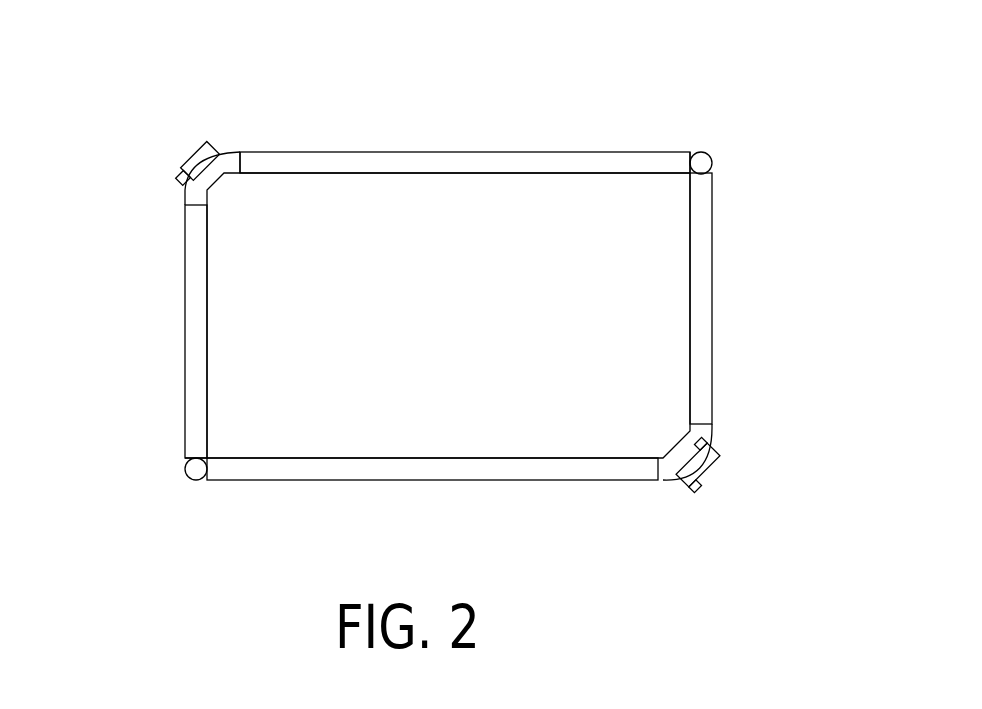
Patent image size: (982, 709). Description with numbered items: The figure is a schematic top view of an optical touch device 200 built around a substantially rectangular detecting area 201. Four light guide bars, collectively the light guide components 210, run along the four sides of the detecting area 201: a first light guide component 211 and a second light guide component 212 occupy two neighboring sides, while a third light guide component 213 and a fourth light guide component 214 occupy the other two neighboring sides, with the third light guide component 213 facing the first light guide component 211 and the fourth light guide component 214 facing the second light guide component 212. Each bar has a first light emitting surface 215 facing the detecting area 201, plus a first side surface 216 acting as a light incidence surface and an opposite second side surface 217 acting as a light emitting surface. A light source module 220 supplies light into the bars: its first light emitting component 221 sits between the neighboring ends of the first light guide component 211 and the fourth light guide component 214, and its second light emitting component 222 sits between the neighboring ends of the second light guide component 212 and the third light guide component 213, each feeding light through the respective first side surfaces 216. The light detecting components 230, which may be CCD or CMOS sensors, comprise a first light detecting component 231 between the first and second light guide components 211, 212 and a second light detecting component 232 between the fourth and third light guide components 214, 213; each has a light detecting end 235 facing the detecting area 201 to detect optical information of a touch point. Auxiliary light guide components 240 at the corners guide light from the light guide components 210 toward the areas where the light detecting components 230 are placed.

The optical touch device 200 is at (811, 556).
The detecting area 201 is at (230, 327).
The light guide components 210 is at (517, 323).
The first light guide component 211 is at (371, 152).
The second light guide component 212 is at (196, 397).
The third light guide component 213 is at (437, 470).
The fourth light guide component 214 is at (713, 279).
The first light emitting surface 215 is at (468, 175).
The first side surface 216 is at (688, 163).
The second side surface 217 is at (242, 163).
The light source module 220 is at (449, 317).
The first light emitting component 221 is at (713, 162).
The second light emitting component 222 is at (186, 470).
The light detecting components 230 is at (489, 297).
The first light detecting component 231 is at (196, 163).
The second light detecting component 232 is at (714, 466).
The light detecting end 235 is at (207, 180).
The auxiliary light guide components 240 is at (186, 196).